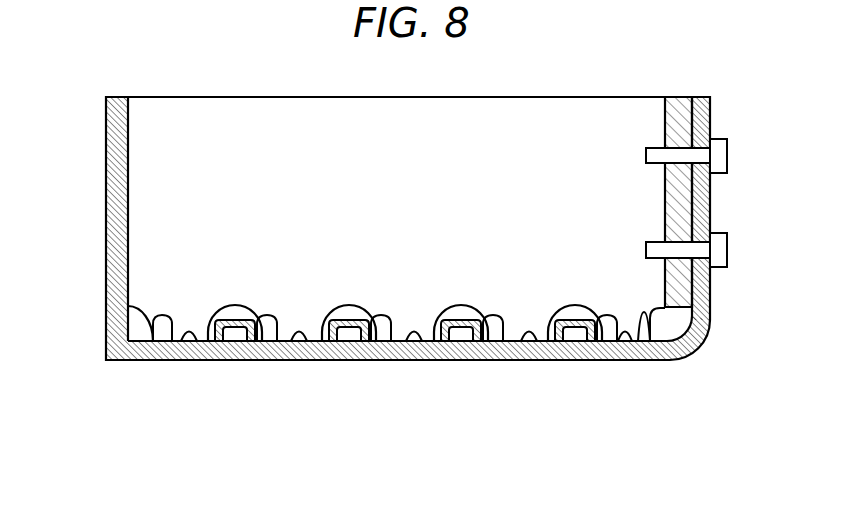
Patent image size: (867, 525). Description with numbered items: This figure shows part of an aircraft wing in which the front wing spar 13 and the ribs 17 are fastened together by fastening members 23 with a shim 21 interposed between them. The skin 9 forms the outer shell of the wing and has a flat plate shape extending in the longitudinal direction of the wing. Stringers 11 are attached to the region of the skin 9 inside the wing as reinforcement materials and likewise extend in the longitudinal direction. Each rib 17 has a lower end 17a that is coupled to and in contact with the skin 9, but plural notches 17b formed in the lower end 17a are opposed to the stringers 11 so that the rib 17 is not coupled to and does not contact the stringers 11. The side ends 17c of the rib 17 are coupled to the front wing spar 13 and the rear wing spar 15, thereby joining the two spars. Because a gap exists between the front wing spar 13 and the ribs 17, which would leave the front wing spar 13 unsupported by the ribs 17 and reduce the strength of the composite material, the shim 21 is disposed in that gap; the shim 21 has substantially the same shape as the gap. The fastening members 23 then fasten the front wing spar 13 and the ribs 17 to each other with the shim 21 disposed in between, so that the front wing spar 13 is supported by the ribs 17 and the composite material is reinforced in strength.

The skin 9 is at (357, 341).
The stringers 11 is at (575, 320).
The front wing spar 13 is at (703, 103).
The rear wing spar 15 is at (115, 103).
The ribs 17 is at (403, 108).
The lower end 17a is at (200, 341).
The notches 17b is at (170, 341).
The side ends 17c is at (130, 216).
The shim 21 is at (682, 108).
The fastening members 23 is at (729, 155).